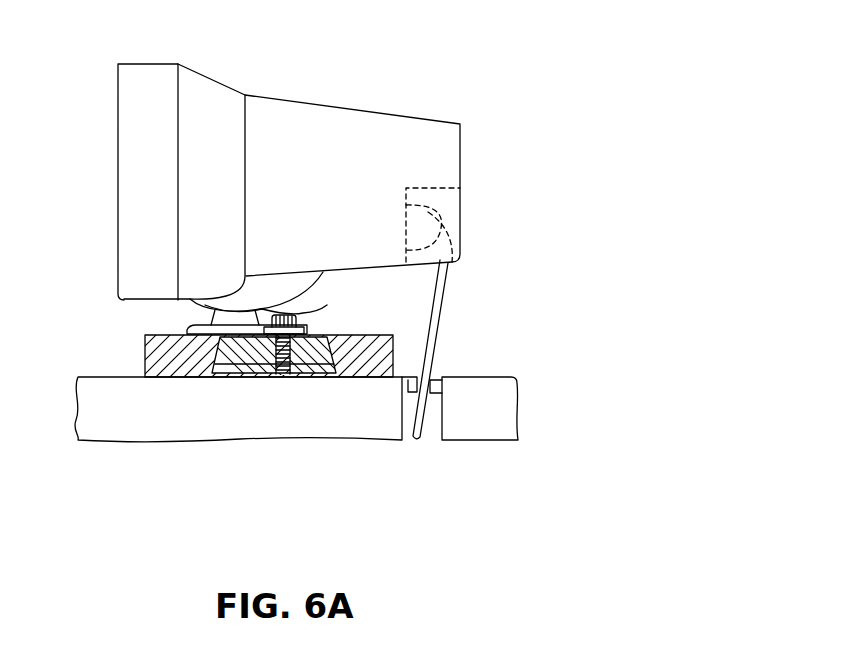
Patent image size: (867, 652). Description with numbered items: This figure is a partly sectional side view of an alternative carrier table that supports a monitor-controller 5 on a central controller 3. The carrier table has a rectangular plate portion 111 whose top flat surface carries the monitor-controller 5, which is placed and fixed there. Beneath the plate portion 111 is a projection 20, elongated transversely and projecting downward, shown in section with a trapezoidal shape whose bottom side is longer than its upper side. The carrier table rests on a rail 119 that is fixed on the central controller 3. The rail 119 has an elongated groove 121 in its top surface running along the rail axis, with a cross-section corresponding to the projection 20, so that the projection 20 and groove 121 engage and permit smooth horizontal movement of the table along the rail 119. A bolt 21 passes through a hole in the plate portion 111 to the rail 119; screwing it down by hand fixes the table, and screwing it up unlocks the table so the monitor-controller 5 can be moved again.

The monitor-controller 5 is at (383, 113).
The rectangular plate portion 111 is at (157, 338).
The rail 119 is at (150, 353).
The projection 20 is at (245, 352).
The bolt 21 is at (297, 317).
The central controller 3 is at (508, 374).
The elongated groove 121 is at (317, 362).